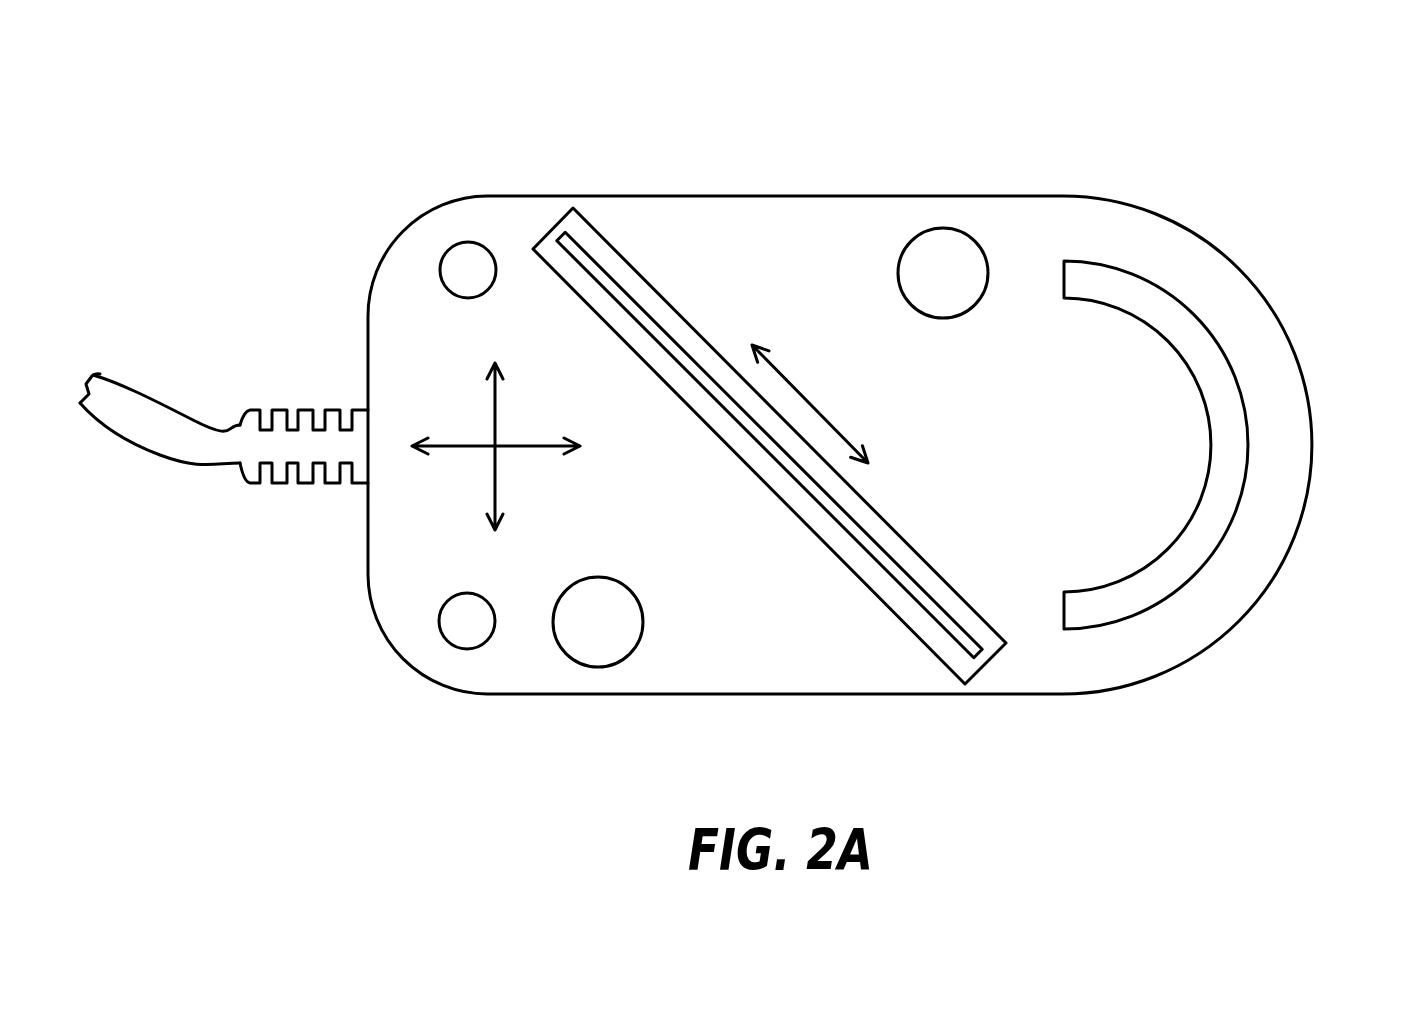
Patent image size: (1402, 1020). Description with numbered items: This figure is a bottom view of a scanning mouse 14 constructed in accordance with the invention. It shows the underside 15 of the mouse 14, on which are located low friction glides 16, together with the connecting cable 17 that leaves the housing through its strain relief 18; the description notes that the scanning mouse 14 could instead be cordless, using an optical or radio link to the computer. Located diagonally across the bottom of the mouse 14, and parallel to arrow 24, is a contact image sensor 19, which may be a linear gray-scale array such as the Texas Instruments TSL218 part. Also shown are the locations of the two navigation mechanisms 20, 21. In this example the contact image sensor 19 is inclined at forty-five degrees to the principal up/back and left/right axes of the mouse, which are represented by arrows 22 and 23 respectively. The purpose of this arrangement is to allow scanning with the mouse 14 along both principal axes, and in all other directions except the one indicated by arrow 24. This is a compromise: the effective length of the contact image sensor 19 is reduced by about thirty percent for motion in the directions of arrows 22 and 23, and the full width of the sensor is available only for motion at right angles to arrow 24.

The scanning mouse 14 is at (681, 50).
The underside 15 is at (1138, 231).
The low friction glides 16 is at (448, 249).
The connecting cable 17 is at (150, 450).
The strain relief 18 is at (305, 484).
The contact image sensor (CIS) 19 is at (648, 281).
The navigation mechanism 20 is at (645, 618).
The navigation mechanism 21 is at (957, 318).
The arrow 22 is at (452, 447).
The arrow 23 is at (495, 487).
The arrow 24 is at (798, 392).